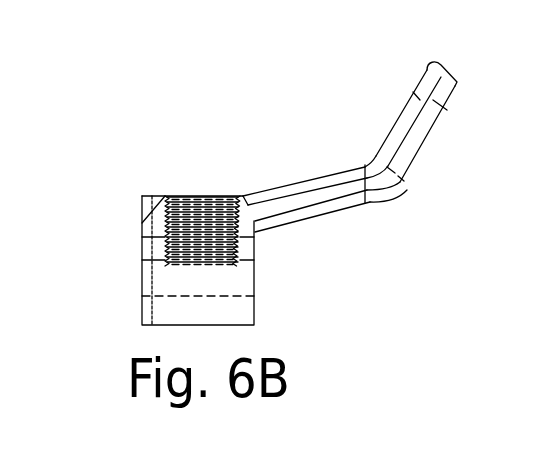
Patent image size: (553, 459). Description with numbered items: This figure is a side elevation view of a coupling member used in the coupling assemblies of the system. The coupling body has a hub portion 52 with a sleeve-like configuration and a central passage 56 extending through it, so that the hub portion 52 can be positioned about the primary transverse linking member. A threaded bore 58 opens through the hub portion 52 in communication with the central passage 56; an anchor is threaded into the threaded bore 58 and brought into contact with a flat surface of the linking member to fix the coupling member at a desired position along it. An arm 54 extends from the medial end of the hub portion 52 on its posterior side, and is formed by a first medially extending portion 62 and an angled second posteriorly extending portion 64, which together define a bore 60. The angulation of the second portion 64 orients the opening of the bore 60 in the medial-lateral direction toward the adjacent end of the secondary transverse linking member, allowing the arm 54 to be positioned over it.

The hub portion 52 is at (142, 325).
The arm 54 is at (457, 82).
The central passage 56 is at (222, 297).
The threaded bore 58 is at (170, 202).
The bore 60 is at (397, 166).
The first medially extending portion 62 is at (338, 213).
The second posteriorly extending portion 64 is at (402, 112).